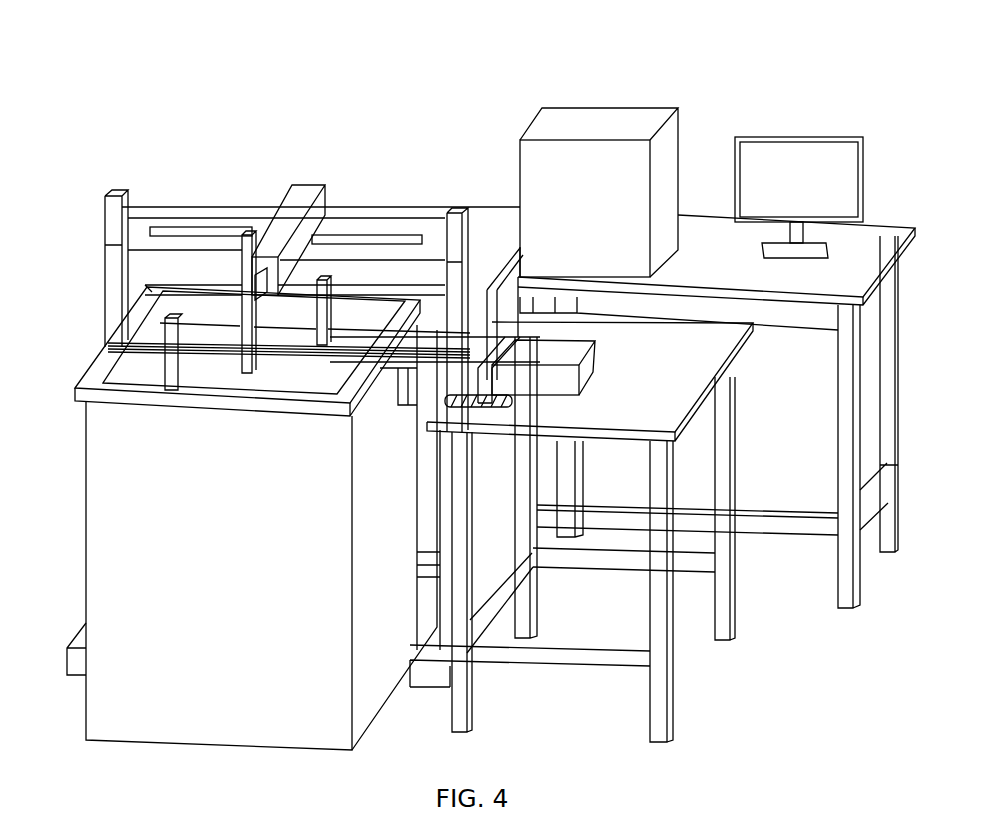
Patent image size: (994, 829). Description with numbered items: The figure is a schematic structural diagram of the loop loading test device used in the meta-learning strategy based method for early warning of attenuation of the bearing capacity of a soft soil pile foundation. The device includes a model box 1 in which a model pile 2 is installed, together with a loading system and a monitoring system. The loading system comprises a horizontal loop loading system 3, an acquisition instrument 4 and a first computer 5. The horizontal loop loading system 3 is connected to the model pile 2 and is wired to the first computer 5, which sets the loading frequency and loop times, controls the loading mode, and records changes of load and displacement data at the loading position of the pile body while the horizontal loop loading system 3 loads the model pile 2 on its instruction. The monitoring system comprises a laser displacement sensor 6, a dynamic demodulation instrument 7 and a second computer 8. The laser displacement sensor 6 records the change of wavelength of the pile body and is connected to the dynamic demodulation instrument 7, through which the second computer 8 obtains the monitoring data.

The model box 1 is at (135, 505).
The model pile 2 is at (243, 275).
The horizontal loop loading system 3 is at (287, 203).
The acquisition instrument 4 is at (628, 110).
The first computer 5 is at (817, 167).
The laser displacement sensor 6 is at (167, 333).
The dynamic demodulation instrument 7 is at (530, 395).
The second computer 8 is at (540, 350).